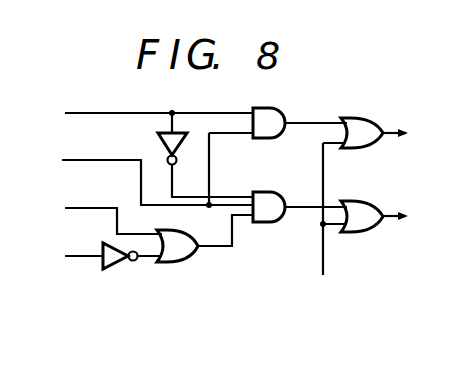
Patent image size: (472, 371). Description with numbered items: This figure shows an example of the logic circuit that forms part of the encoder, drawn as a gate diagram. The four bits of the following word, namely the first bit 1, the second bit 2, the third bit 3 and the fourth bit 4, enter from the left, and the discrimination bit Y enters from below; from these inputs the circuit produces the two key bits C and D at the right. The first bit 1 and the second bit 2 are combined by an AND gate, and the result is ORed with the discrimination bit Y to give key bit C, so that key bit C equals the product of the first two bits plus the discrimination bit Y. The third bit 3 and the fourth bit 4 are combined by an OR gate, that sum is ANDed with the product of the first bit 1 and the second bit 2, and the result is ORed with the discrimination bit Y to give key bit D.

The bit q1″ 1 is at (61, 89).
The bit q2″ 2 is at (61, 139).
The bit q3″ 3 is at (61, 187).
The bit q4″ 4 is at (61, 235).
The key bit C is at (384, 132).
The key bit D is at (384, 217).
The discrimination bit Y is at (328, 228).